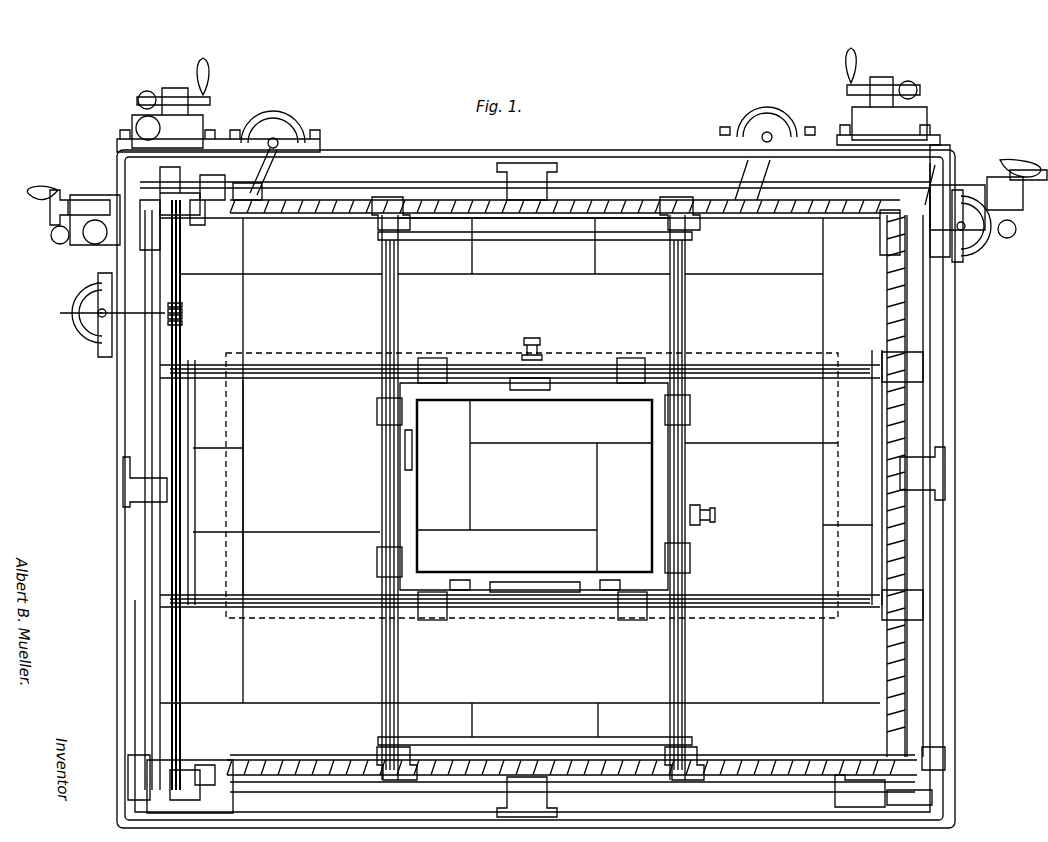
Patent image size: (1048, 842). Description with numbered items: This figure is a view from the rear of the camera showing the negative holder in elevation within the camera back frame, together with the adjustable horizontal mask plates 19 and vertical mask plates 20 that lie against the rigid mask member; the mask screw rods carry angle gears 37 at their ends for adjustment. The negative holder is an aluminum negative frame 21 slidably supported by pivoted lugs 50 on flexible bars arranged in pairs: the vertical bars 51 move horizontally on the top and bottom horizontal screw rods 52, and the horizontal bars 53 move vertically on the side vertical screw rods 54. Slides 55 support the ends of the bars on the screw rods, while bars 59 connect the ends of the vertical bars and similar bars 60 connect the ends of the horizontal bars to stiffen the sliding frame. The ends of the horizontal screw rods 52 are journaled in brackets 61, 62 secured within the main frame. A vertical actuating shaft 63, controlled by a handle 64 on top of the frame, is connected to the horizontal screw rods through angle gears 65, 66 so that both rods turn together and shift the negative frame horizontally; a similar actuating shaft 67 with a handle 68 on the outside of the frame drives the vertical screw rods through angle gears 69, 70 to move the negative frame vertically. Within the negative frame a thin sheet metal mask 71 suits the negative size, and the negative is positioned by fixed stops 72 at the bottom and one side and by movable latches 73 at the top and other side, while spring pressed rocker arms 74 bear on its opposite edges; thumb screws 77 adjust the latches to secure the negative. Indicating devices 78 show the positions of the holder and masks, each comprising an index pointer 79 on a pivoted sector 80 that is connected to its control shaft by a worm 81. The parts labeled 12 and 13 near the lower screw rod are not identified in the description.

The bed rail 12 is at (572, 760).
The base rail 13 is at (572, 787).
The horizontal mask plates 19 is at (536, 280).
The vertical mask plates 20 is at (293, 487).
The negative frame 21 is at (665, 450).
The angle gears 37 is at (530, 170).
The pivoted lugs 50 is at (432, 360).
The vertical bars 51 is at (398, 300).
The horizontal screw rods 52 is at (760, 207).
The horizontal bars 53 is at (305, 365).
The vertical screw rods 54 is at (895, 642).
The slides 55 is at (372, 215).
The connecting bars 59 is at (636, 236).
The connecting bars 60 is at (195, 497).
The brackets 61 is at (272, 140).
The brackets 62 is at (130, 770).
The vertical actuating shaft 63 is at (182, 658).
The handle 64 is at (210, 78).
The angle gears 65 is at (160, 185).
The angle gears 66 is at (190, 225).
The actuating shaft 67 is at (45, 205).
The handle 68 is at (52, 212).
The angle gears 69 is at (135, 220).
The angle gears 70 is at (180, 243).
The sheet metal mask 71 is at (602, 388).
The fixed stops 72 is at (466, 580).
The movable latches 73 is at (530, 390).
The rocker arms 74 is at (415, 500).
The thumb screws 77 is at (536, 340).
The indicating devices 78 is at (295, 140).
The index pointer 79 is at (80, 320).
The pivoted sector 80 is at (140, 318).
The worm 81 is at (183, 322).